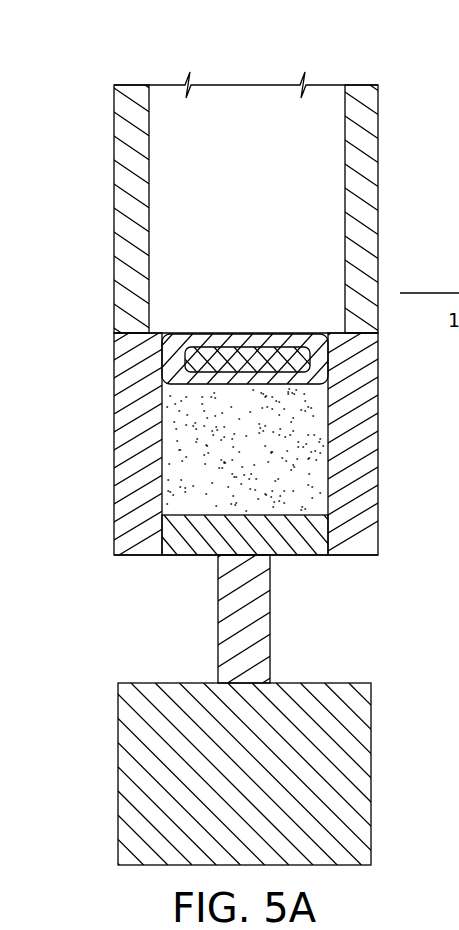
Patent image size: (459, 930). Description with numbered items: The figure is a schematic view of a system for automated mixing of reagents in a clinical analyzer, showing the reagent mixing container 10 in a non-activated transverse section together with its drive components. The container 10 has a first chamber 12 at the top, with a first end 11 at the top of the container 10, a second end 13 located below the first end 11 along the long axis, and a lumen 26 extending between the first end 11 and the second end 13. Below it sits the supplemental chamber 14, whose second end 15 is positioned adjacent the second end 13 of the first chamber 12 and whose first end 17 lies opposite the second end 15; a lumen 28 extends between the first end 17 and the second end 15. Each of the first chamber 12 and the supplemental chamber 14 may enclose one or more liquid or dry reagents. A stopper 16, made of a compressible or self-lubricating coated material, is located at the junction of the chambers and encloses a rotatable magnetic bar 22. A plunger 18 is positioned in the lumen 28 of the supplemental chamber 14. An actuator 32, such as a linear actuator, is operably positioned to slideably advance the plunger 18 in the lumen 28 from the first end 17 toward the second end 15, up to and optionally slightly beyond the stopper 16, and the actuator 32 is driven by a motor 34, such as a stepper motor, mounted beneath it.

The reagent mixing container 10 is at (418, 72).
The first end 11 is at (130, 104).
The first chamber 12 is at (380, 183).
The second end 13 is at (150, 332).
The supplemental chamber 14 is at (380, 440).
The second end 15 is at (135, 345).
The stopper 16 is at (312, 363).
The first end 17 is at (112, 548).
The plunger 18 is at (243, 525).
The rotatable magnetic bar 22 is at (247, 333).
The lumen 26 is at (260, 193).
The lumen 28 is at (260, 449).
The actuator 32 is at (272, 620).
The motor 34 is at (372, 775).